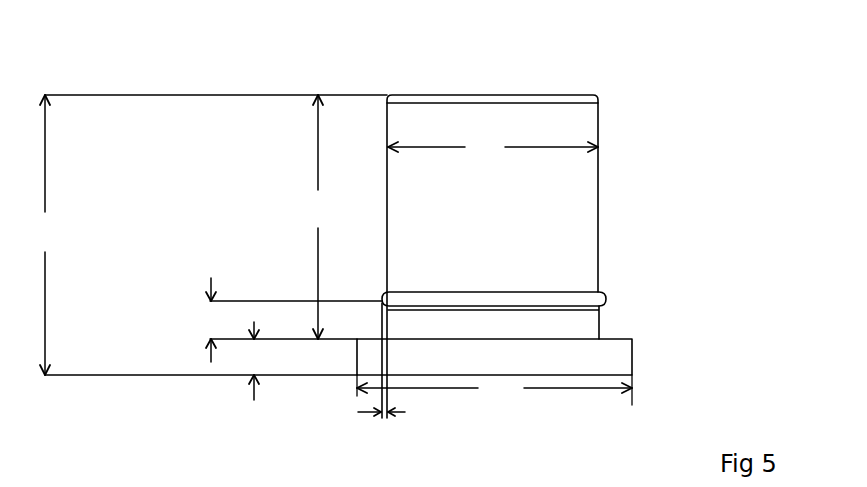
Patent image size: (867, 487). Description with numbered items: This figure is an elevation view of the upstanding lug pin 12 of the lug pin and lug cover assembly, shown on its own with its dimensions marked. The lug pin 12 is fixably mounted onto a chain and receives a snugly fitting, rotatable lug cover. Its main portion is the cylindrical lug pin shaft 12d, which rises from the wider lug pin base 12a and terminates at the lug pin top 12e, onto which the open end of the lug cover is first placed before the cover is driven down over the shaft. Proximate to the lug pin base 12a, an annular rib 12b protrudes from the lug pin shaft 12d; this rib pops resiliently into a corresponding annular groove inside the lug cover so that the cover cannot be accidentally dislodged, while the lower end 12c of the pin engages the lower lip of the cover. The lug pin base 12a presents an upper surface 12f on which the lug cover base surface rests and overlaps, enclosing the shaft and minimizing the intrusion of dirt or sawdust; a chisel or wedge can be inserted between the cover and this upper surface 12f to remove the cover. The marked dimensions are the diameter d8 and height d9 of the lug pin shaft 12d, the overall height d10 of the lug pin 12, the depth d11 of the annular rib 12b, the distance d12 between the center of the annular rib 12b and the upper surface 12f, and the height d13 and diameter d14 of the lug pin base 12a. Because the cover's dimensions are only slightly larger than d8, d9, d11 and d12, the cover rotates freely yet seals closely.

The lug pin 12 is at (744, 133).
The lug pin base 12a is at (632, 358).
The lug pin annular rib 12b is at (603, 296).
The lower end 12c is at (600, 322).
The lug pin shaft 12d is at (600, 207).
The lug pin top 12e is at (533, 97).
The upper surface of lug pin base 12f is at (618, 338).
The diameter of lug pin shaft d8 is at (493, 149).
The height of lug pin shaft d9 is at (313, 217).
The height of lug pin d10 is at (209, 235).
The depth of lug pin annular rib d11 is at (383, 427).
The distance between center of lug pin annular rib and upper surface of lug pin base d12 is at (211, 321).
The height of lug pin base d13 is at (250, 360).
The diameter of lug pin base d14 is at (494, 389).